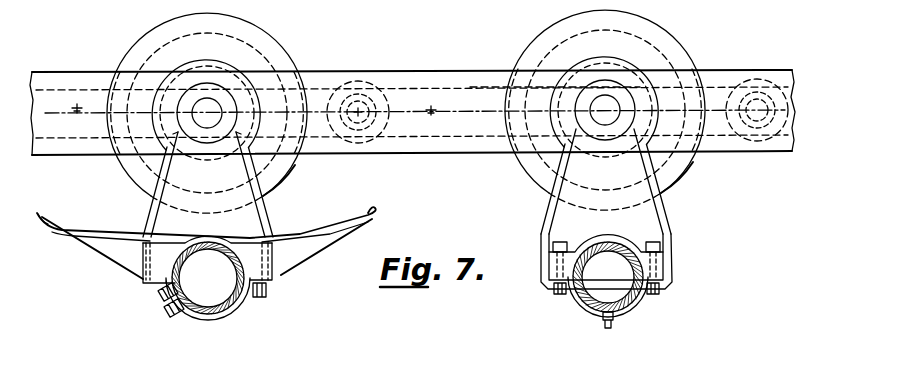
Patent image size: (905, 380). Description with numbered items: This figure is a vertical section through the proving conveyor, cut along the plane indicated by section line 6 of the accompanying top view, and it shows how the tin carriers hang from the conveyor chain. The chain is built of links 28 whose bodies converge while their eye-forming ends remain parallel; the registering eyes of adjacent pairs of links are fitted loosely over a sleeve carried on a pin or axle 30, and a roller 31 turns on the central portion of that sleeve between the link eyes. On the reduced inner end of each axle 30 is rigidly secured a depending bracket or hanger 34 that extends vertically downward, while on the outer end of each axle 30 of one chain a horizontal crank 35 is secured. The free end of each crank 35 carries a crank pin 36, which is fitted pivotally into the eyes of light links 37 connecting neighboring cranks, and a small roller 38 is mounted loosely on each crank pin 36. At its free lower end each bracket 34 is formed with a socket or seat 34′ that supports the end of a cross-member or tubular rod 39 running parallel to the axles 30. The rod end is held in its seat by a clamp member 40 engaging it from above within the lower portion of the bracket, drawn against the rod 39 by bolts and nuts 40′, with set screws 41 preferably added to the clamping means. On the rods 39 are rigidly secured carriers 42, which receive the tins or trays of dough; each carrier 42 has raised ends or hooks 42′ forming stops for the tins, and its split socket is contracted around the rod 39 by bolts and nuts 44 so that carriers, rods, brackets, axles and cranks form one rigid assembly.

The section line 6— 6 is at (415, 110).
The links 28 is at (401, 74).
The pin or axle 30 is at (201, 108).
The roller 31 is at (277, 48).
The bracket or hanger 34 is at (267, 204).
The sockets or seats 34′ is at (592, 308).
The crank 35 is at (700, 161).
The crank pins 36 is at (369, 133).
The light links 37 is at (478, 92).
The small rollers 38 is at (356, 82).
The cross-members or tubular rods 39 is at (417, 274).
The clamp members 40 is at (575, 250).
The bolts and nuts 40′ is at (650, 244).
The set screws 41 is at (616, 325).
The carriers 42 is at (312, 232).
The raised ends or hooks 42′ is at (46, 214).
The bolts and nuts 44 is at (175, 316).